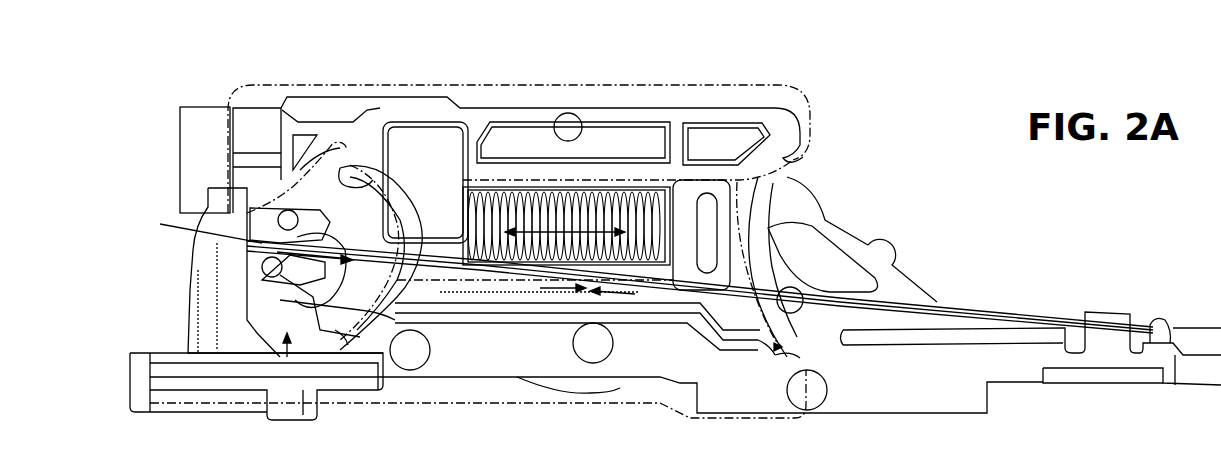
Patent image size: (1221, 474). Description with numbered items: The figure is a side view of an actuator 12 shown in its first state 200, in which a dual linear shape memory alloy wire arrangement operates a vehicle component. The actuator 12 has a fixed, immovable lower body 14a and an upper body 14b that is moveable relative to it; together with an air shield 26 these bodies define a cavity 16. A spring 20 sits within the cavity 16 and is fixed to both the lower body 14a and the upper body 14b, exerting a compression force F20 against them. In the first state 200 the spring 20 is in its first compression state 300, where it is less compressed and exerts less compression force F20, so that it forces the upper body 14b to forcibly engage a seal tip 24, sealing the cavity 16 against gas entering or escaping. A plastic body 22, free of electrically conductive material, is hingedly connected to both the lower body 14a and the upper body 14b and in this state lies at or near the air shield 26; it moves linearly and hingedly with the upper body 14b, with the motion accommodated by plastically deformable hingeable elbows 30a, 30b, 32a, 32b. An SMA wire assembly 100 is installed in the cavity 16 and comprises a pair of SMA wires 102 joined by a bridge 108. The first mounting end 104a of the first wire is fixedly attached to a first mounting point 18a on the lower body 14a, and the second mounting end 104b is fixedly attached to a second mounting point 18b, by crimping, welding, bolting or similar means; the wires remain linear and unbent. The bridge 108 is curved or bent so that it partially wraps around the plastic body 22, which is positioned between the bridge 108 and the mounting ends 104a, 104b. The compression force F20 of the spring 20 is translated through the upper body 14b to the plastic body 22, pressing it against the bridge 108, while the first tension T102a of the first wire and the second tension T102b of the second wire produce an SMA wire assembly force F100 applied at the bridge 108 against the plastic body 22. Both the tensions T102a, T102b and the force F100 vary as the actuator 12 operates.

The actuator 12 is at (512, 217).
The first state 200 is at (818, 68).
The lower body 14a is at (465, 405).
The upper body 14b is at (697, 85).
The cavity 16 is at (287, 357).
The first mounting point 18a is at (1172, 292).
The second mounting point 18b is at (1157, 320).
The spring 20 is at (566, 158).
The first compression state 300 is at (587, 193).
The plastic body 22 is at (350, 227).
The seal tip 24 is at (207, 118).
The air shield 26 is at (210, 323).
The hingeable elbow 30a is at (340, 340).
The hingeable elbow 30b is at (347, 150).
The hingeable elbow 32a is at (760, 357).
The hingeable elbow 32b is at (803, 157).
The SMA wire assembly 100 is at (981, 303).
The pair of SMA wires 102 is at (688, 287).
The first mounting end 104a is at (1031, 313).
The second mounting end 104b is at (1150, 325).
The bridge 108 is at (195, 229).
The compression force F20 is at (567, 193).
The SMA wire assembly force F100 is at (313, 247).
The first tension T102a is at (587, 290).
The second tension T102b is at (566, 464).